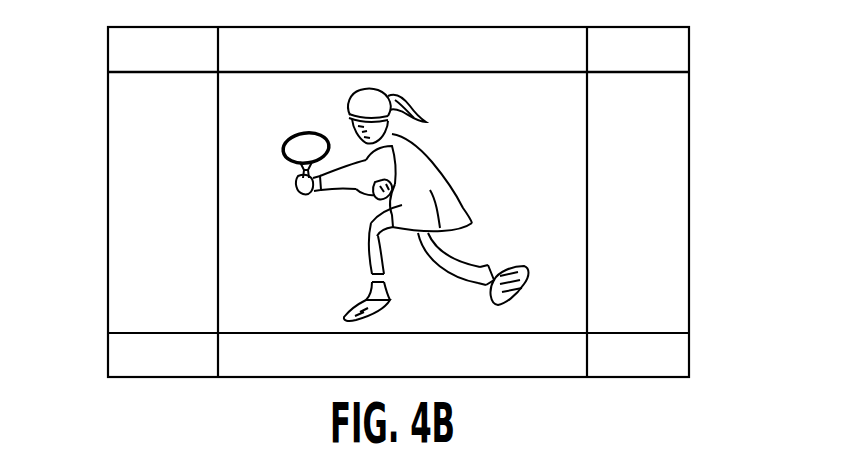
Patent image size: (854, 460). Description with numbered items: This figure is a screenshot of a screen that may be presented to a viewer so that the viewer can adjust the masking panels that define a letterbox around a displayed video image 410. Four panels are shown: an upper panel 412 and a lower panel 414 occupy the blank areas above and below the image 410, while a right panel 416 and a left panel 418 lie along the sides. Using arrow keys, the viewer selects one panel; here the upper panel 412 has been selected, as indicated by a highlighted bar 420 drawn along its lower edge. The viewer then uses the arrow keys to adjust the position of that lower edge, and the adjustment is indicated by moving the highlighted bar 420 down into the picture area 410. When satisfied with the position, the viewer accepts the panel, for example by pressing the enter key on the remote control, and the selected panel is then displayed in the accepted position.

The video image 410 is at (550, 203).
The upper panel 412 is at (552, 45).
The lower panel 414 is at (548, 362).
The right panel 416 is at (663, 290).
The left panel 418 is at (130, 280).
The highlighted bar 420 is at (130, 72).